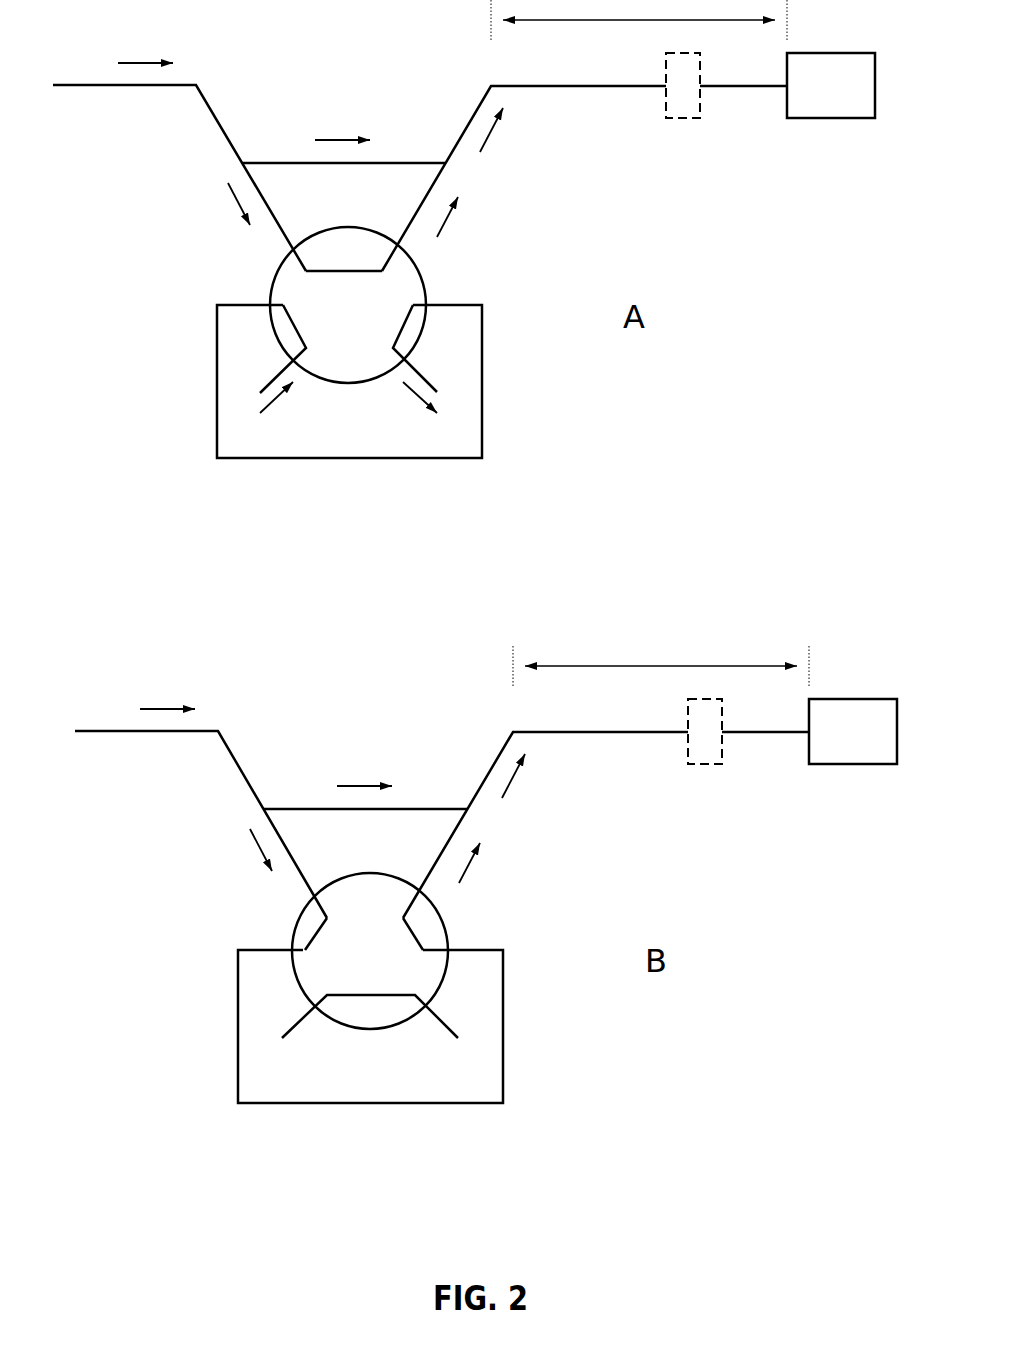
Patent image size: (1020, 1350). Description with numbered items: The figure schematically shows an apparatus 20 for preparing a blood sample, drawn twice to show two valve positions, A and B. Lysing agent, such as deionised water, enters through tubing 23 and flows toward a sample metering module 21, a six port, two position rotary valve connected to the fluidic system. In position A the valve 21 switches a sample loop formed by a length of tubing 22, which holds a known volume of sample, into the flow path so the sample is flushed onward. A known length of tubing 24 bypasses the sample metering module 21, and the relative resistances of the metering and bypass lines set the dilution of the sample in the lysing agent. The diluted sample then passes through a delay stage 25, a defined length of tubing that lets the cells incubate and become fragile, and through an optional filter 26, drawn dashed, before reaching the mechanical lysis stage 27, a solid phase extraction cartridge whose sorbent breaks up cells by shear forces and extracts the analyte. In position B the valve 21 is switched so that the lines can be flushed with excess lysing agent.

The apparatus 20 is at (479, 539).
The sample metering module 21 is at (422, 279).
The length of tubing 22 is at (217, 378).
The tubing 23 is at (128, 86).
The tubing 24 is at (417, 162).
The delay stage 25 is at (600, 22).
The filter 26 is at (688, 87).
The mechanical lysis stage 27 is at (842, 107).